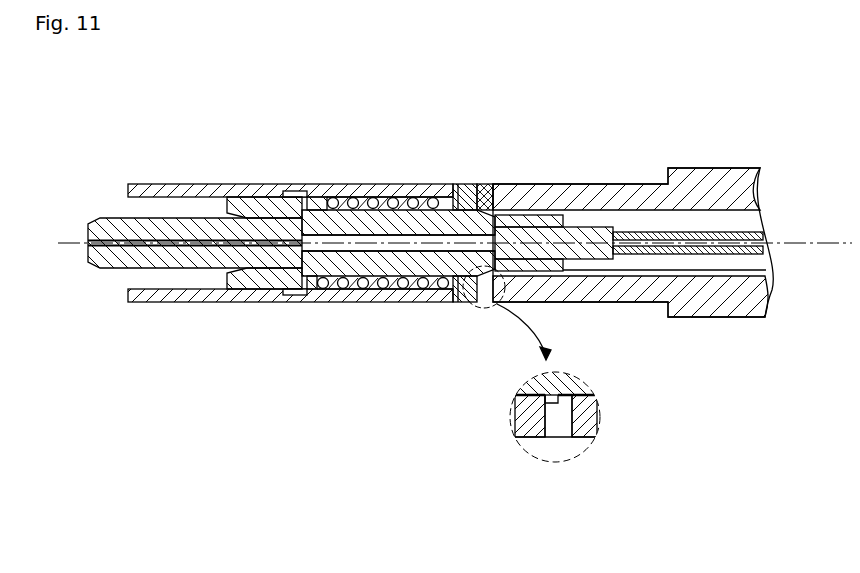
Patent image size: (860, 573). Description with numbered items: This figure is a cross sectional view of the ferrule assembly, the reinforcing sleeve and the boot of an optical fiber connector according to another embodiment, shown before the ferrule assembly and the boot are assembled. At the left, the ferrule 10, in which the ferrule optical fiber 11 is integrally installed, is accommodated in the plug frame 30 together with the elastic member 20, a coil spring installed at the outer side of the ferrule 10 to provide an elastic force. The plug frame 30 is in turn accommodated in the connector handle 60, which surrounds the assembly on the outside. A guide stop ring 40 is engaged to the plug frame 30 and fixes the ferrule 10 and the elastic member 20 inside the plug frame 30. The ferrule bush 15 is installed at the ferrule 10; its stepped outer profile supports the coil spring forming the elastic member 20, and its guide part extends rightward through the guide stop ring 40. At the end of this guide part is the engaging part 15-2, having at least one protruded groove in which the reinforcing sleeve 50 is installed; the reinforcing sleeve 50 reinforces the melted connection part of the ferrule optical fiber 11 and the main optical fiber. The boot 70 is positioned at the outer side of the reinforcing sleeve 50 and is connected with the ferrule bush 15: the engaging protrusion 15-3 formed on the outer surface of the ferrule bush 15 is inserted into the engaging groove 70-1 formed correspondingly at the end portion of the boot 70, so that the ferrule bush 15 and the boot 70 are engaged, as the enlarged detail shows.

The connector handle 60 is at (176, 186).
The ferrule 10 is at (247, 232).
The ferrule bush 15 is at (330, 222).
The plug frame 30 is at (355, 197).
The elastic member 20 is at (388, 200).
The guide stop ring 40 is at (440, 188).
The ferrule optical fiber 11 is at (515, 238).
The boot 70 is at (557, 190).
The reinforcing sleeve 50 is at (634, 232).
The engaging part 15-2 is at (548, 262).
The engaging protrusion 15-3 is at (566, 398).
The engaging groove 70-1 is at (555, 430).